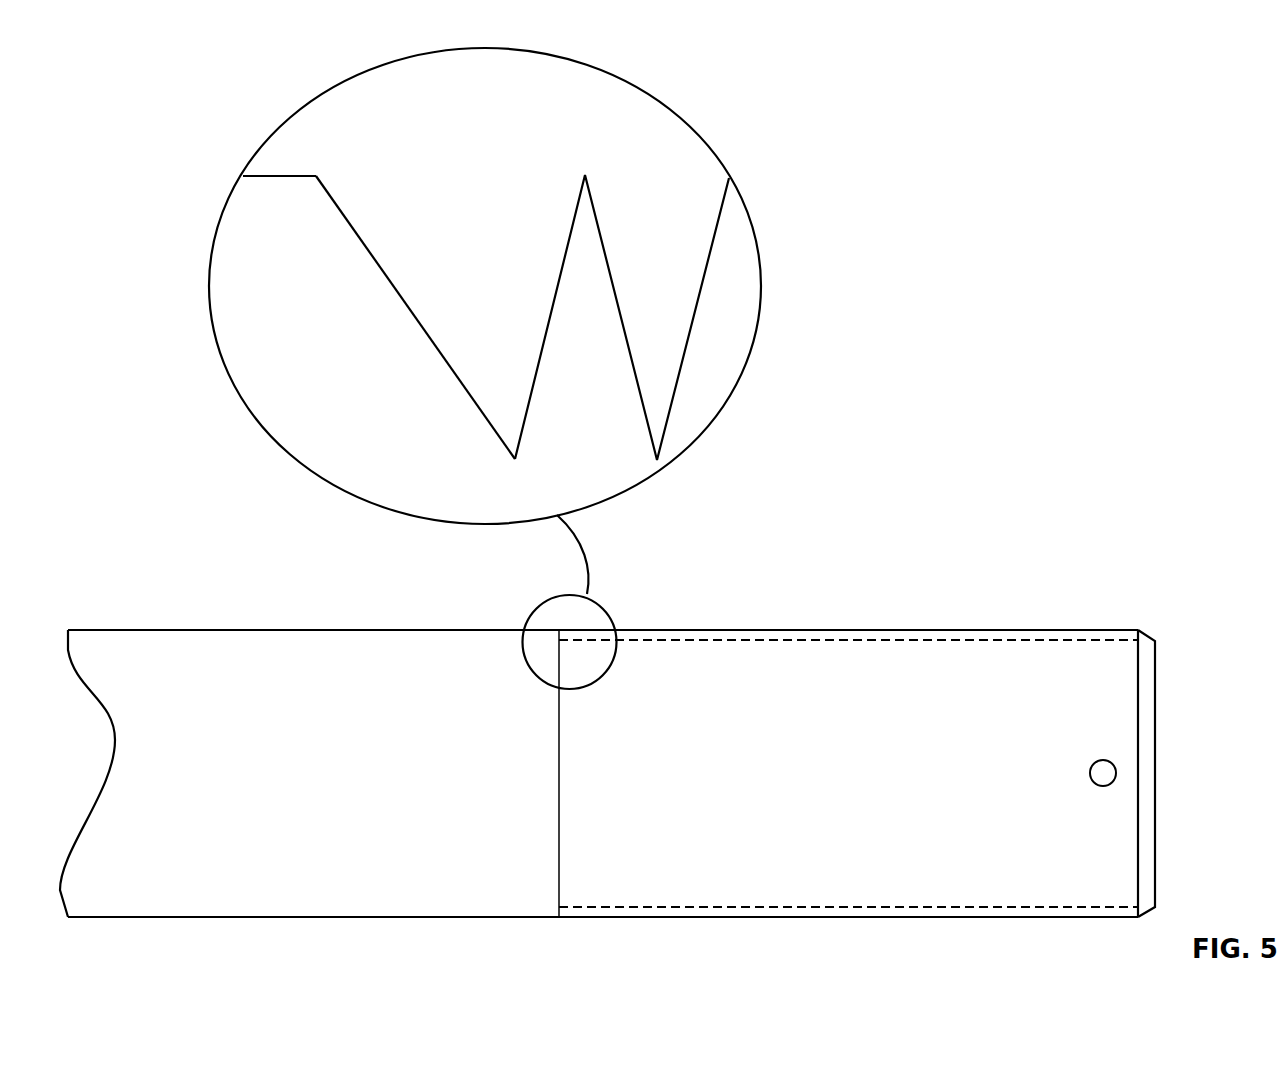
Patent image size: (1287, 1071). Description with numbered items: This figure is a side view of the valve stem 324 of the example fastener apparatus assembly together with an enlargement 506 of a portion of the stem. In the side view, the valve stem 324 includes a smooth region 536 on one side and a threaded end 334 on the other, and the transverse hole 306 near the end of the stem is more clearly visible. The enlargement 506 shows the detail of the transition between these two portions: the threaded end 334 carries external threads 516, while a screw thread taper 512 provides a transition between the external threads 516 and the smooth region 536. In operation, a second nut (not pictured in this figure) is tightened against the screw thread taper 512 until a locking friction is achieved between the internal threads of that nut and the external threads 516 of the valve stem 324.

The transverse hole 306 is at (1107, 760).
The valve stem 324 is at (275, 650).
The threaded end 334 is at (778, 628).
The enlargement 506 is at (209, 305).
The screw thread taper 512 is at (380, 262).
The external threads 516 is at (575, 280).
The smooth region 536 is at (297, 175).